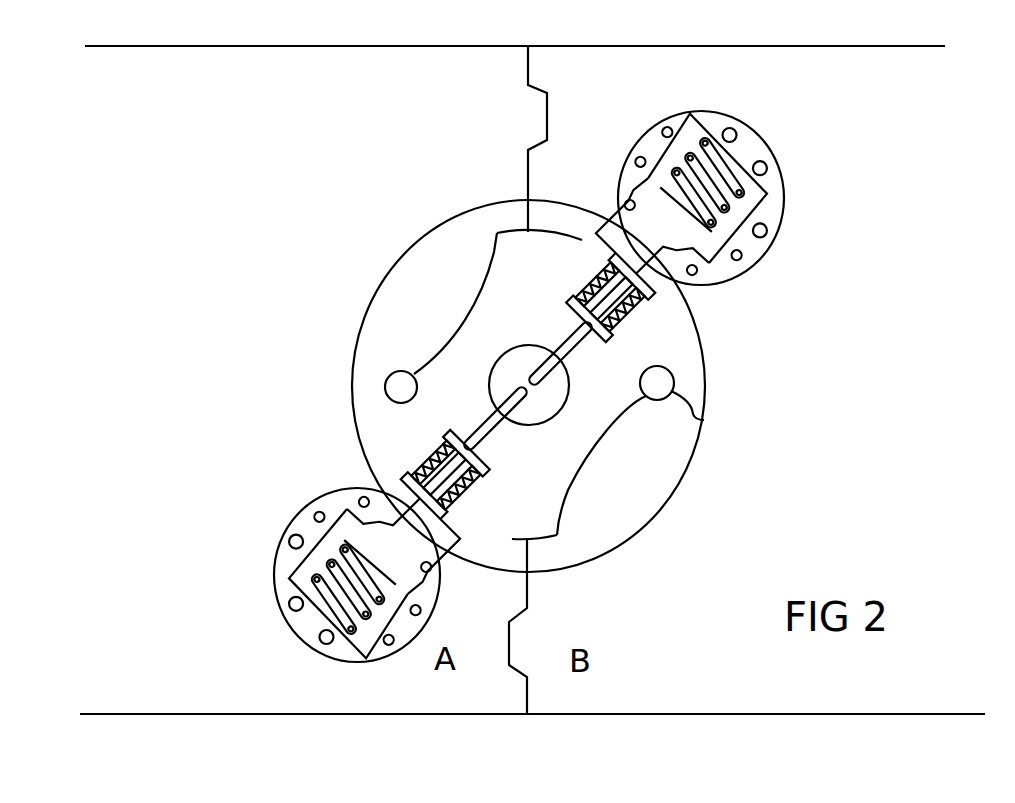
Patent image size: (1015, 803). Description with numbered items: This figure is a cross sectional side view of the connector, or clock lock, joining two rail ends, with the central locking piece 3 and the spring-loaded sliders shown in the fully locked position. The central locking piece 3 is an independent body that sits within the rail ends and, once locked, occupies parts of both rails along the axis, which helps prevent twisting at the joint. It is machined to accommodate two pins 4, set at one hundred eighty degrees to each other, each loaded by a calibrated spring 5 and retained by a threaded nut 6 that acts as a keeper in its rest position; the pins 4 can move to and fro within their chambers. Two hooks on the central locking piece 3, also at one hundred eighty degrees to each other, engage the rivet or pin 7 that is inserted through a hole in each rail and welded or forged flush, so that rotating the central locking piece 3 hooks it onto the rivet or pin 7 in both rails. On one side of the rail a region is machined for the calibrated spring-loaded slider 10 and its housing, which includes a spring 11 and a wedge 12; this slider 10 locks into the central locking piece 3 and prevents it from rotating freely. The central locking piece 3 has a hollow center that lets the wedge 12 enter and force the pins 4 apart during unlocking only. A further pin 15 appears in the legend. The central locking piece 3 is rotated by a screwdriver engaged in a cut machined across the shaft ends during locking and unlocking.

The central locking piece 3 is at (528, 386).
The pin 4 is at (465, 430).
The spring 5 is at (527, 290).
The threaded nut 6 is at (611, 386).
The rivet or pin 7 is at (686, 573).
The slider 10 is at (548, 386).
The spring 11 is at (594, 386).
The wedge 12 is at (752, 148).
The pin 15 is at (435, 386).